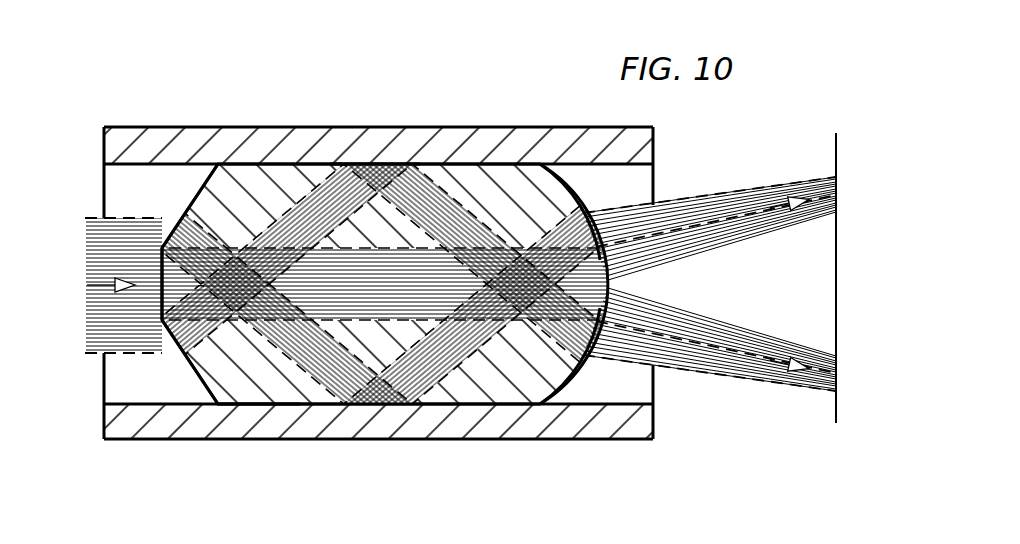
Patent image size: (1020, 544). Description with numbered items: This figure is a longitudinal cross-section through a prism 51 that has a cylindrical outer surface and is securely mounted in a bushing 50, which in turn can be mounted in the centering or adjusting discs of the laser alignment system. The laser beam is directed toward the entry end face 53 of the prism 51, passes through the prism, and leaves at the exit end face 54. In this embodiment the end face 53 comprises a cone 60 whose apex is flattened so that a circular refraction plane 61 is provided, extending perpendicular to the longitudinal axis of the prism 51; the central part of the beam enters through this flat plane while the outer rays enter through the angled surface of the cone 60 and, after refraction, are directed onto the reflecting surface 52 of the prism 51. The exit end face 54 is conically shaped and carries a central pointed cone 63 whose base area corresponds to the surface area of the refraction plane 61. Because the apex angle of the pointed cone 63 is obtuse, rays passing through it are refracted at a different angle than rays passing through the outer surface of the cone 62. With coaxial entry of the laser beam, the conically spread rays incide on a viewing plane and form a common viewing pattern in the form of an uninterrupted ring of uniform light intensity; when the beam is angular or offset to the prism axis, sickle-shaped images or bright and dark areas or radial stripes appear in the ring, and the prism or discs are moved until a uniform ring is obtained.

The bushing 50 is at (553, 142).
The prism 51 is at (497, 190).
The reflecting surface 52 is at (450, 168).
The end face 53 is at (196, 186).
The end face 54 is at (572, 190).
The cone 60 is at (220, 377).
The refraction plane 61 is at (158, 307).
The cone 62 is at (570, 384).
The pointed cone 63 is at (645, 294).